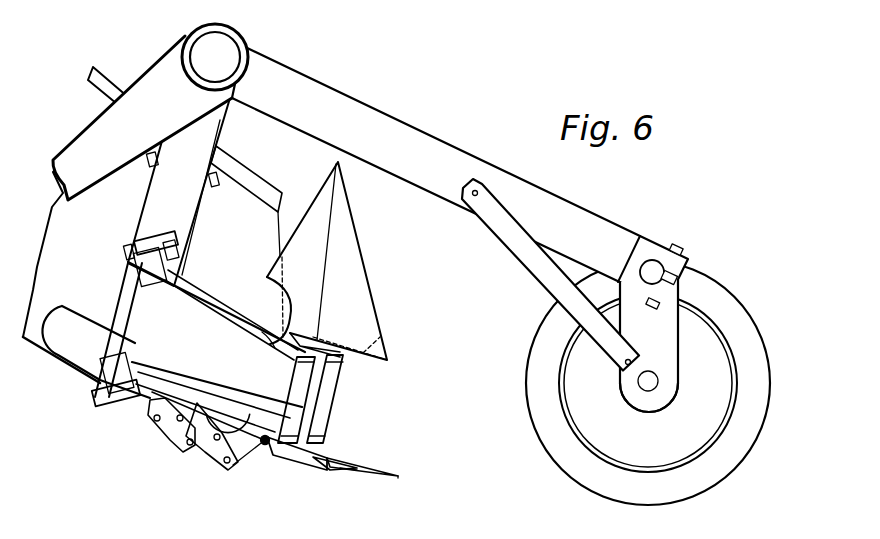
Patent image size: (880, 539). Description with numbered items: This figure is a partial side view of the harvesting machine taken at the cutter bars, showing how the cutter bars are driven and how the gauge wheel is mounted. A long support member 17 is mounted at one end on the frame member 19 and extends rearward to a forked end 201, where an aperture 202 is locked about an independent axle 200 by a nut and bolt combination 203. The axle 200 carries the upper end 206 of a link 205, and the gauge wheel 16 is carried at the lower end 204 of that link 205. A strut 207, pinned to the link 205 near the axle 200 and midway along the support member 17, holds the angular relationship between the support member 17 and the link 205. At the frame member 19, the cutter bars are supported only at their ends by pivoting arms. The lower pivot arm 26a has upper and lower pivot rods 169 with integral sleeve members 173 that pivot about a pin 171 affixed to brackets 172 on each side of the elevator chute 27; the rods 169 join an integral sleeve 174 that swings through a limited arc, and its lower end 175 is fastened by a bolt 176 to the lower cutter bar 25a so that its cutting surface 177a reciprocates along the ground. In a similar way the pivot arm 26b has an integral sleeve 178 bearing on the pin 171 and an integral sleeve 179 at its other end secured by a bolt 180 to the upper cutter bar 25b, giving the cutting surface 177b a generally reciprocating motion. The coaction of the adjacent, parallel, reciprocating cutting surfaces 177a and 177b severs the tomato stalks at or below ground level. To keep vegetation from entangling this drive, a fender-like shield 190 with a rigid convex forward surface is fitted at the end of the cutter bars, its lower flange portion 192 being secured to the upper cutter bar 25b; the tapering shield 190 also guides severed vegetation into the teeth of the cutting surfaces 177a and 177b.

The gauge wheel 16 is at (737, 358).
The support member 17 is at (407, 130).
The frame member 19 is at (213, 135).
The lower cutter bar 25a is at (310, 465).
The upper cutter bar 25b is at (326, 450).
The lower pivot arm 26a is at (177, 437).
The pivot arm for upper cutter bar 26b is at (217, 362).
The elevator chute 27 is at (283, 200).
The pivot rod 169 is at (195, 290).
The pin 171 is at (161, 237).
The bracket 172 is at (178, 246).
The sleeve member 173 is at (140, 265).
The sleeve 174 is at (297, 386).
The lower end of sleeve 175 is at (286, 433).
The bolt 176 is at (277, 340).
The cutting surface of lower cutter bar 177a is at (353, 470).
The cutting surface of upper cutter bar 177b is at (429, 473).
The integral sleeve 178 is at (140, 305).
The integral sleeve 179 is at (323, 406).
The bolt 180 is at (343, 360).
The shield 190 is at (357, 274).
The lower flange portion 192 is at (383, 350).
The axle 200 is at (652, 268).
The forked end 201 is at (690, 300).
The aperture 202 is at (640, 257).
The nut and bolt combination 203 is at (682, 247).
The lower end of link 204 is at (653, 400).
The link 205 is at (655, 381).
The upper end of link 206 is at (670, 320).
The strut 207 is at (520, 250).